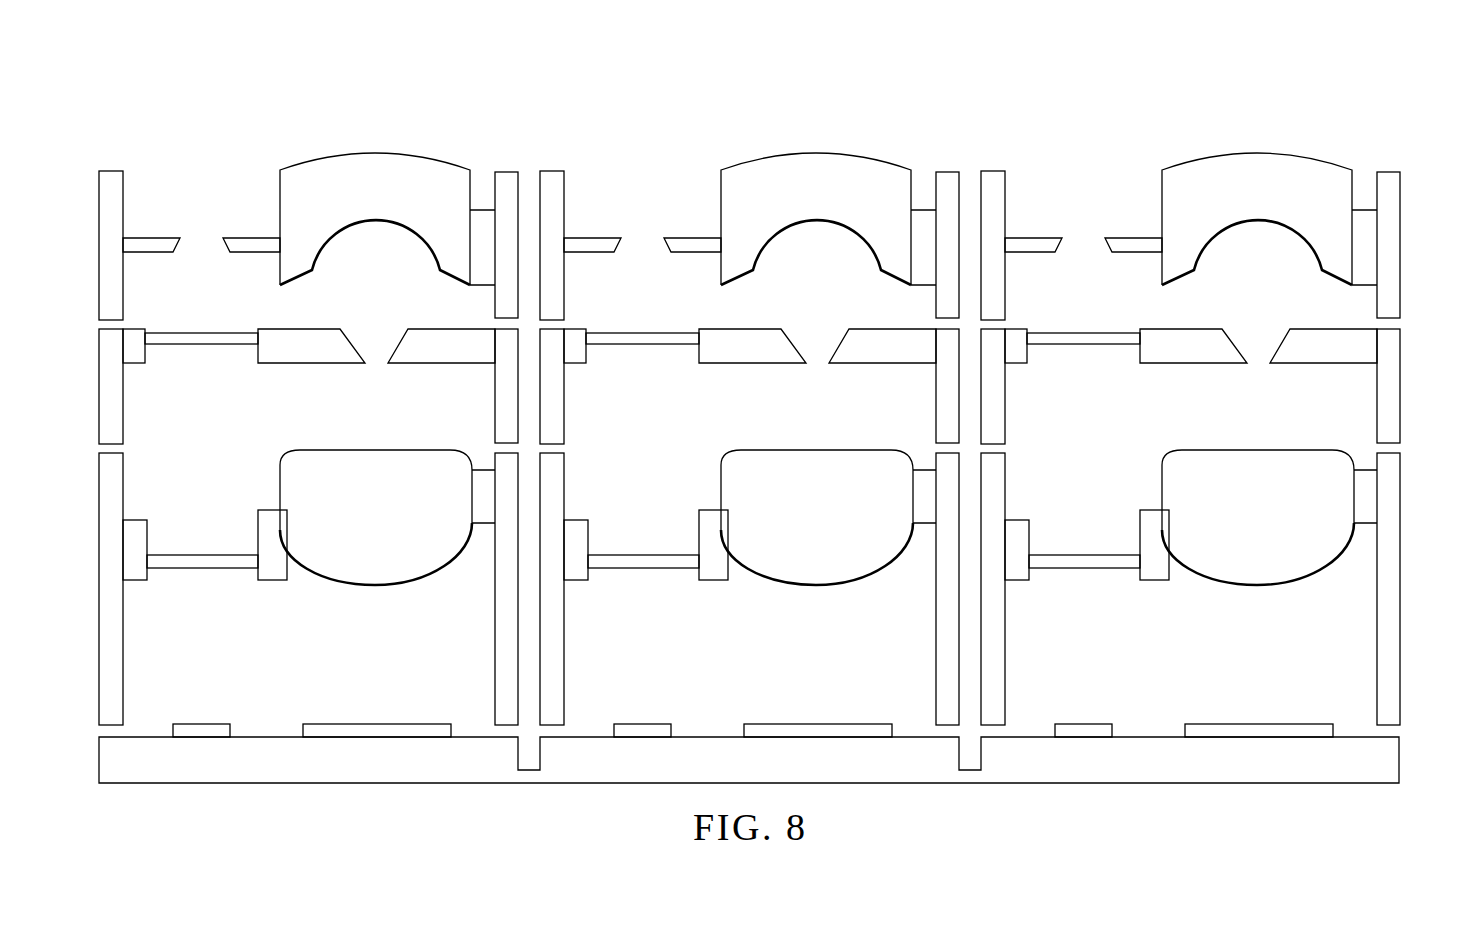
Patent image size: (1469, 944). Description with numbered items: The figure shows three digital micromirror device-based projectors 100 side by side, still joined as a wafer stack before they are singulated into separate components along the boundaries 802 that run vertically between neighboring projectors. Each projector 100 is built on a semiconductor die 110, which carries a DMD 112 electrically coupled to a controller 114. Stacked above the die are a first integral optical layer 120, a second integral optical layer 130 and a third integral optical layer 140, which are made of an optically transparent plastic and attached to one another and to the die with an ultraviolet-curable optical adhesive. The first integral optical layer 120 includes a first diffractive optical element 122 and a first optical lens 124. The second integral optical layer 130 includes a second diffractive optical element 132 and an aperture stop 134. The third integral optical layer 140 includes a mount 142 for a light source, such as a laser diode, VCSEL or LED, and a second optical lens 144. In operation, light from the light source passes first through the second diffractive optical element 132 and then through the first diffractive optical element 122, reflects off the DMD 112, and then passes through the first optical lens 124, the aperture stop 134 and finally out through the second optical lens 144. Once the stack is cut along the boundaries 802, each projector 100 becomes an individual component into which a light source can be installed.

The DMD-based projector 100 is at (279, 121).
The semiconductor die 110 is at (1399, 757).
The DMD 112 is at (1258, 724).
The controller 114 is at (1082, 724).
The first integral optical layer 120 is at (1398, 590).
The first diffractive optical element 122 is at (1080, 555).
The first optical lens 124 is at (1258, 586).
The second integral optical layer 130 is at (1398, 388).
The second diffractive optical element 132 is at (1084, 345).
The aperture stop 134 is at (1259, 344).
The third integral optical layer 140 is at (1398, 245).
The mount 142 is at (1085, 216).
The second optical lens 144 is at (1258, 153).
The boundaries 802 is at (525, 152).